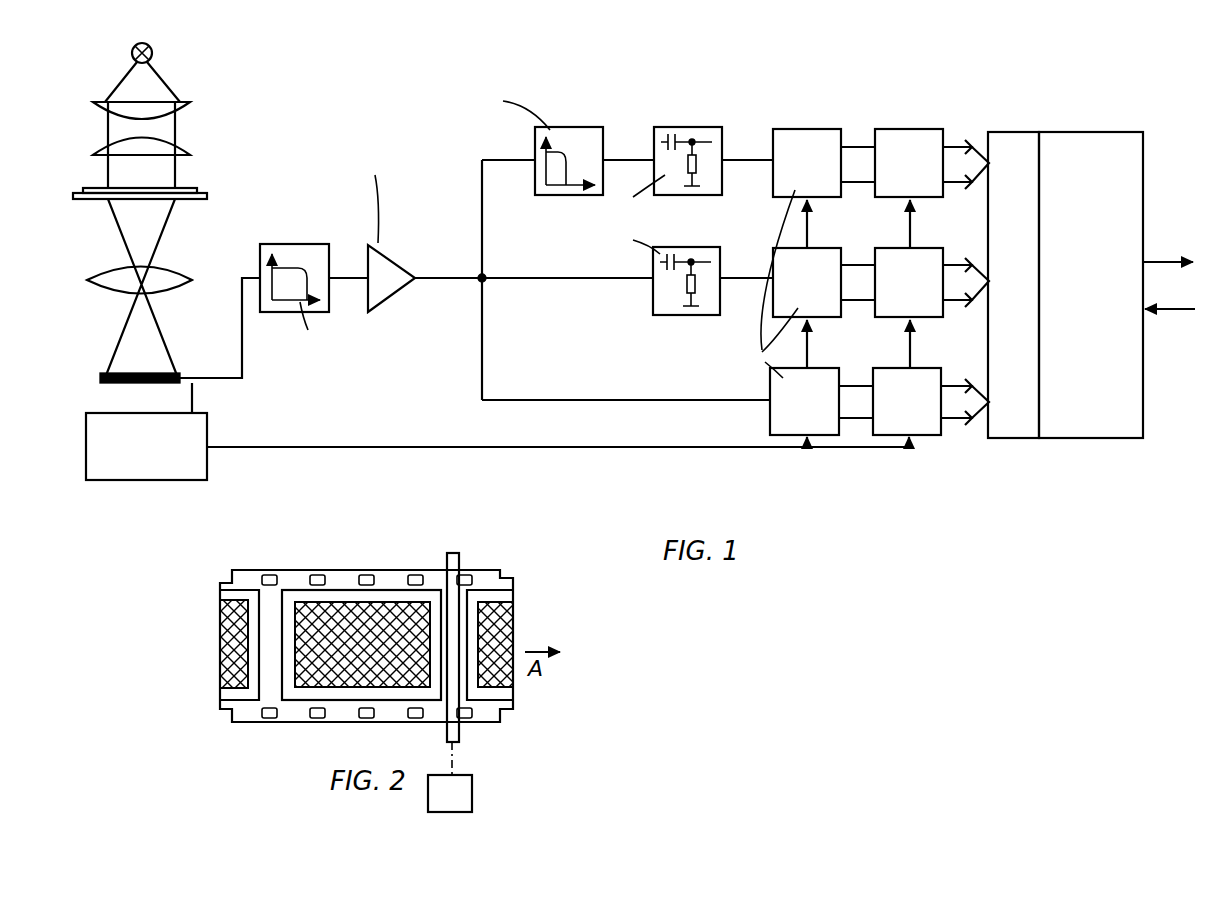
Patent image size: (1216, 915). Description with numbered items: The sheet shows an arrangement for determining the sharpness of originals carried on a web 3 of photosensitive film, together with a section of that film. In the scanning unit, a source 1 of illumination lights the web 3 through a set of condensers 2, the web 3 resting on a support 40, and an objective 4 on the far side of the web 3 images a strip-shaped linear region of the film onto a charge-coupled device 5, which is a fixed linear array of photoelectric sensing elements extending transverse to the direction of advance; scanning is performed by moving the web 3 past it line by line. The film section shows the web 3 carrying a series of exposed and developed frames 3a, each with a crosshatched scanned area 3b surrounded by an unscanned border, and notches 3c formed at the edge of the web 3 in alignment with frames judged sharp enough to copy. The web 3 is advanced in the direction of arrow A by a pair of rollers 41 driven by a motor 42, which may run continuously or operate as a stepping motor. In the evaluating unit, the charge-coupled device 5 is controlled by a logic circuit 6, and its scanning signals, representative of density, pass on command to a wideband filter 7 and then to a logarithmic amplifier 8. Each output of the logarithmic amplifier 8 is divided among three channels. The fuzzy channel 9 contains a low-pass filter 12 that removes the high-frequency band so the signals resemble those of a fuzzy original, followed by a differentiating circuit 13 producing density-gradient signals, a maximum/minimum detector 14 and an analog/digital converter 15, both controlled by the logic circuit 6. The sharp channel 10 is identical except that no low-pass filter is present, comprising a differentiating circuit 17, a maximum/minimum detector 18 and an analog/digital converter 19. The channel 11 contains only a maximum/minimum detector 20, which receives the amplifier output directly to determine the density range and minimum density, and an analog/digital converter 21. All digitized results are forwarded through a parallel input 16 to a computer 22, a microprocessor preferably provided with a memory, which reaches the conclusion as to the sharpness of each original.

In FIG. 1, the source of illumination 1 is at (152, 51).
In FIG. 1, the condensers 2 is at (175, 150).
In FIG. 1, the web 3 is at (198, 190).
In FIG. 2, the web 3 is at (490, 580).
In FIG. 1, the support 40 is at (207, 197).
In FIG. 1, the objective 4 is at (165, 272).
In FIG. 1, the charge-coupled device 5 is at (103, 386).
In FIG. 1, the logic circuit 6 is at (140, 462).
In FIG. 1, the wideband filter 7 is at (305, 252).
In FIG. 1, the logarithmic amplifier 8 is at (388, 258).
In FIG. 1, the fuzzy channel 9 is at (748, 158).
In FIG. 1, the sharp channel 10 is at (745, 278).
In FIG. 1, the channel for determining density range and minimum density 11 is at (855, 420).
In FIG. 1, the low-pass filter 12 is at (575, 138).
In FIG. 1, the differentiating circuit 13 is at (687, 133).
In FIG. 1, the maximum/minimum detector 14 is at (805, 140).
In FIG. 1, the analog/digital converter 15 is at (908, 138).
In FIG. 1, the parallel input 16 is at (1008, 140).
In FIG. 1, the differentiating circuit 17 is at (688, 256).
In FIG. 1, the maximum/minimum detector 18 is at (823, 262).
In FIG. 1, the analog/digital converter 19 is at (930, 258).
In FIG. 1, the maximum/minimum detector 20 is at (822, 384).
In FIG. 1, the analog/digital converter 21 is at (925, 380).
In FIG. 1, the computer 22 is at (1132, 165).
In FIG. 2, the frames 3a is at (390, 590).
In FIG. 2, the scanned area 3b is at (340, 605).
In FIG. 2, the notches 3c is at (285, 571).
In FIG. 2, the rollers 41 is at (456, 556).
In FIG. 2, the motor 42 is at (472, 793).